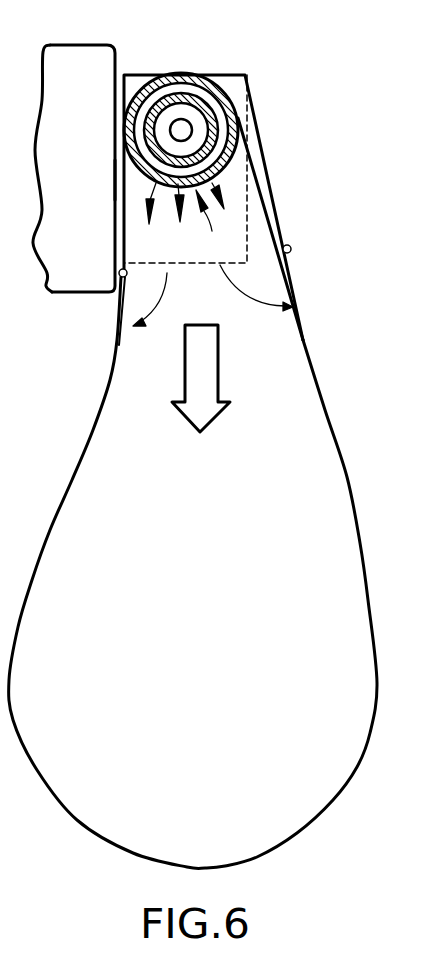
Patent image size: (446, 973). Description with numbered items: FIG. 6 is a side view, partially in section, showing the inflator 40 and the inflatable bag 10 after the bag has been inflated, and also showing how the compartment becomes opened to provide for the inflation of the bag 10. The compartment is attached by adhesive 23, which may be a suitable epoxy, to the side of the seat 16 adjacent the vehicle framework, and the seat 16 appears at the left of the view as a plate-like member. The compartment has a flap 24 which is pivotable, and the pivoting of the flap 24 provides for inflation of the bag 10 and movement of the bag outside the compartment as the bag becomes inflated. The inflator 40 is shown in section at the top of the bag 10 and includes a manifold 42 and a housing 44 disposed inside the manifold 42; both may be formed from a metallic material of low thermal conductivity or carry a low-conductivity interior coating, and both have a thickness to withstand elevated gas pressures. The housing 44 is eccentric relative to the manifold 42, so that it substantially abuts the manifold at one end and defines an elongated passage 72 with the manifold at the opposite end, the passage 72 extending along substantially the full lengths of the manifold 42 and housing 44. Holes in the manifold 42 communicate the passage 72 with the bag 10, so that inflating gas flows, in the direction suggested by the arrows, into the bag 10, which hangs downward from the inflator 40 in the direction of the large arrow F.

The inflatable bag 10 is at (330, 372).
The seat 16 is at (67, 47).
The adhesive 23 is at (113, 178).
The flap 24 is at (283, 212).
The inflator 40 is at (270, 236).
The manifold 42 is at (215, 148).
The housing 44 is at (206, 74).
The passage 72 is at (168, 184).
The force direction arrow F is at (215, 415).